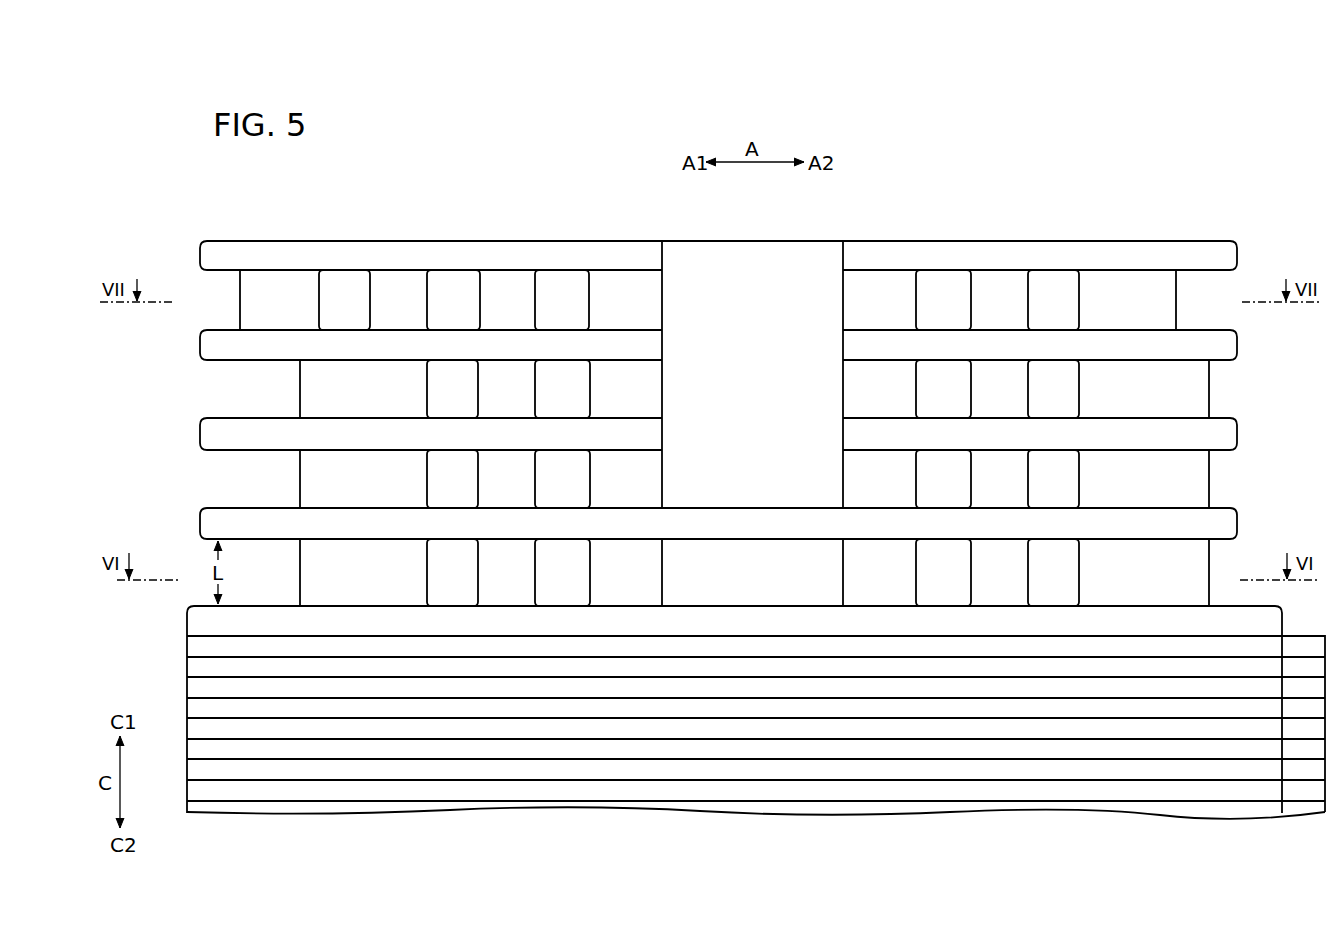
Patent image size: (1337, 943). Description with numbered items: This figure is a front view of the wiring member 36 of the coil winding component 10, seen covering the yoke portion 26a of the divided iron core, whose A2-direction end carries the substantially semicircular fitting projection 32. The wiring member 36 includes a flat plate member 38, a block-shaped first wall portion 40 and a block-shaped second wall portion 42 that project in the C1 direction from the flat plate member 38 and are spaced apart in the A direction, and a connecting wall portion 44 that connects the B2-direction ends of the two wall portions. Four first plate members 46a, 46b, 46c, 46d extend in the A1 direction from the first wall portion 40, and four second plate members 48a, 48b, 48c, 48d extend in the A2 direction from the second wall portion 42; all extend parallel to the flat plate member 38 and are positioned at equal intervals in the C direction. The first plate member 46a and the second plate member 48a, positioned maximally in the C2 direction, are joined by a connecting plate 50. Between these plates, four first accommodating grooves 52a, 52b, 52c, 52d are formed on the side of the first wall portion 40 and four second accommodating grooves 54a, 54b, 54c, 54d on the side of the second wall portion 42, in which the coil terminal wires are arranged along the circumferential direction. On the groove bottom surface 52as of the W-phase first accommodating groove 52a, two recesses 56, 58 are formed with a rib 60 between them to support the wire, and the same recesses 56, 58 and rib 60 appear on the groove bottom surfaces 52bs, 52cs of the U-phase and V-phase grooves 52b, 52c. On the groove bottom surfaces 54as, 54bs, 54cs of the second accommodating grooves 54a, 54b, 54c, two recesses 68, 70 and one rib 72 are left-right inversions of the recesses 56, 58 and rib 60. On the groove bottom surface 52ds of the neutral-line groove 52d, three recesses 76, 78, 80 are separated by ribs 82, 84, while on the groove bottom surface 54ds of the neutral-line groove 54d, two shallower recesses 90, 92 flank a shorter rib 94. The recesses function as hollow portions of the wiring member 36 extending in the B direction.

The coil winding component 10 is at (417, 154).
The yoke portion 26a is at (200, 692).
The fitting projection 32 is at (1302, 648).
The wiring member 36 is at (316, 223).
The flat plate member 38 is at (198, 623).
The first wall portion 40 is at (388, 240).
The second wall portion 42 is at (1125, 240).
The connecting wall portion 44 is at (755, 240).
The first plate member 46a is at (208, 523).
The first plate member 46b is at (208, 434).
The first plate member 46c is at (208, 345).
The first plate member 46d is at (208, 253).
The second plate member 48a is at (1232, 520).
The second plate member 48b is at (1232, 430).
The second plate member 48c is at (1232, 344).
The second plate member 48d is at (1232, 253).
The connecting plate 50 is at (750, 521).
The first accommodating groove 52a is at (326, 566).
The first accommodating groove 52b is at (326, 477).
The first accommodating groove 52c is at (326, 387).
The first accommodating groove 52d is at (258, 291).
The groove bottom surface 52as is at (652, 575).
The groove bottom surface 52bs is at (652, 487).
The groove bottom surface 52cs is at (652, 385).
The groove bottom surface 52ds is at (652, 299).
The second accommodating groove 54a is at (1192, 562).
The second accommodating groove 54b is at (1192, 471).
The second accommodating groove 54c is at (1192, 381).
The second accommodating groove 54d is at (1160, 293).
The groove bottom surface 54as is at (851, 578).
The groove bottom surface 54bs is at (851, 490).
The groove bottom surface 54cs is at (851, 388).
The groove bottom surface 54ds is at (851, 302).
The recess 56 is at (438, 390).
The recess 58 is at (582, 397).
The rib 60 is at (507, 403).
The recess 68 is at (926, 381).
The recess 70 is at (1070, 400).
The rib 72 is at (1005, 405).
The recess 76 is at (333, 303).
The recess 78 is at (456, 290).
The recess 80 is at (580, 305).
The rib 82 is at (395, 318).
The rib 84 is at (508, 318).
The recess 90 is at (926, 294).
The recess 92 is at (1070, 315).
The rib 94 is at (1005, 318).